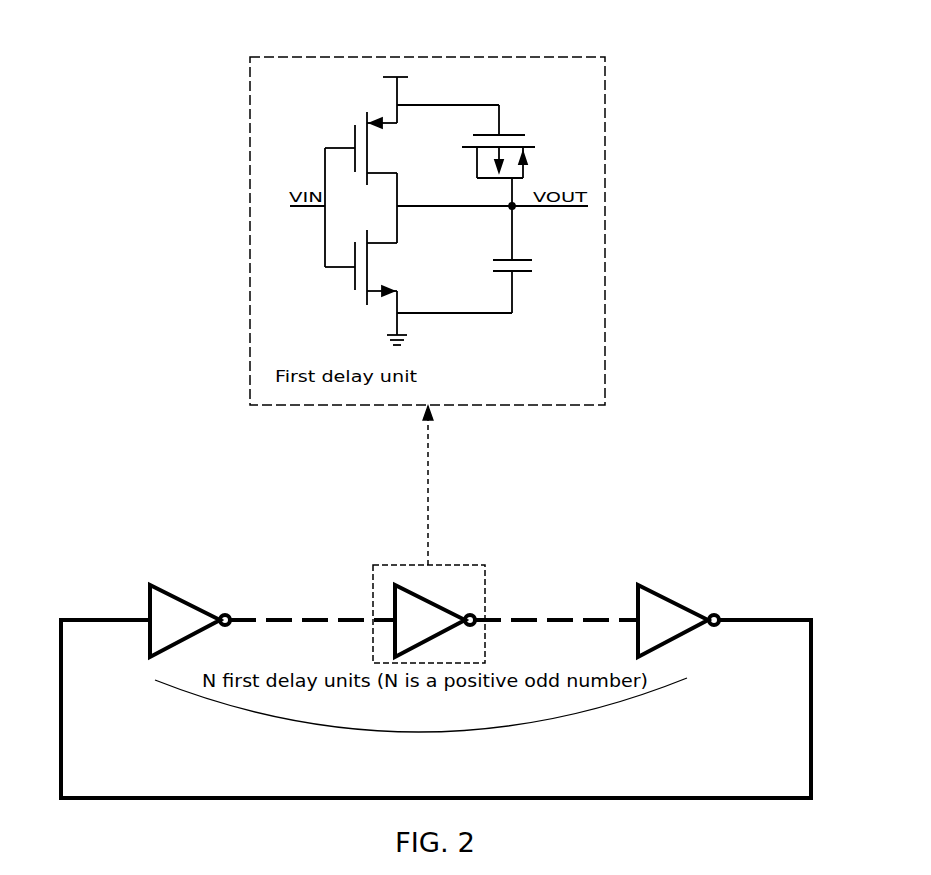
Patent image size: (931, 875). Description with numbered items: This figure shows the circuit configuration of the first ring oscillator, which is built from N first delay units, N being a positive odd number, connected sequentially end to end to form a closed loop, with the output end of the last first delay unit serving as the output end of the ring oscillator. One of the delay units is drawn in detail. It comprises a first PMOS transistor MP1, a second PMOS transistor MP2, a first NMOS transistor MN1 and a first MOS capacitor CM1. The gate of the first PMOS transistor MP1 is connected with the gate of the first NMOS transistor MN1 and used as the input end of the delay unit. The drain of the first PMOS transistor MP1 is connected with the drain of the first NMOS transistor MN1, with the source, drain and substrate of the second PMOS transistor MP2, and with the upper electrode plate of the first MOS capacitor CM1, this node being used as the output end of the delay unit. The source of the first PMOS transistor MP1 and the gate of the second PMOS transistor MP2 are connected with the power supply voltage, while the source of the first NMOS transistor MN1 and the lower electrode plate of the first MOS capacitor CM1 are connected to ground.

The first PMOS transistor MP1 is at (361, 148).
The second PMOS transistor MP2 is at (510, 143).
The first NMOS transistor MN1 is at (376, 267).
The first MOS capacitor CM1 is at (523, 278).